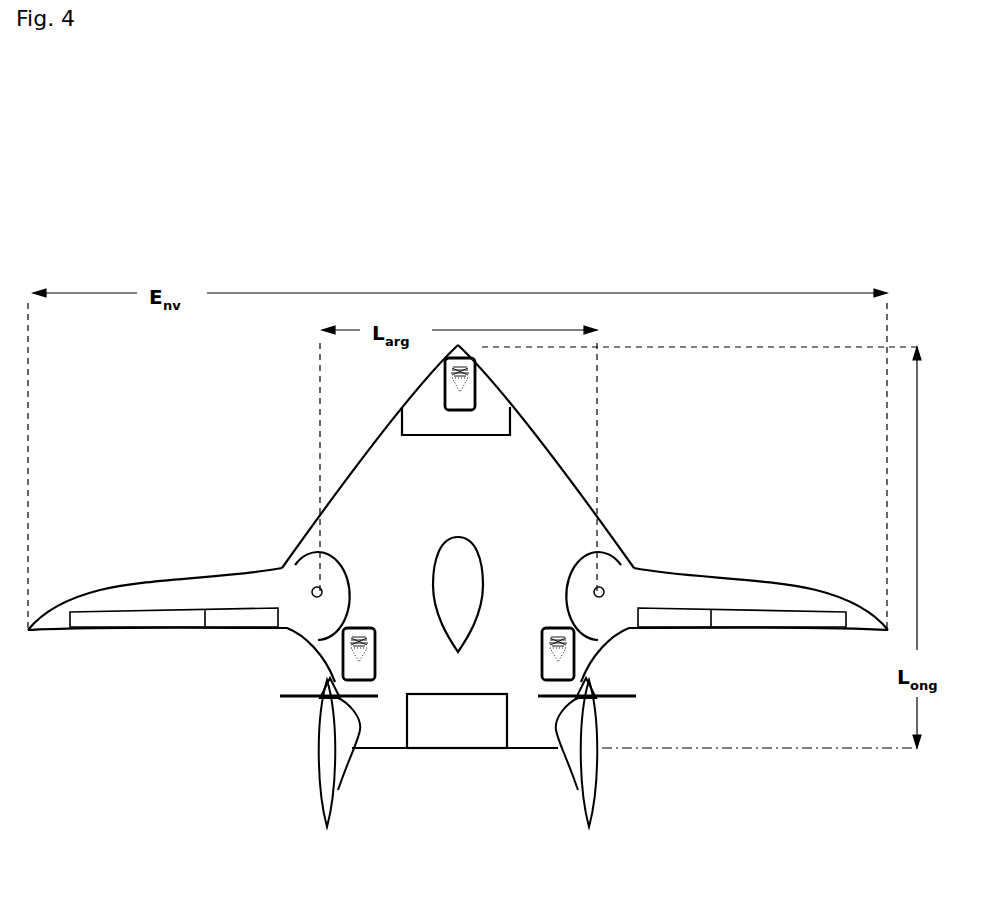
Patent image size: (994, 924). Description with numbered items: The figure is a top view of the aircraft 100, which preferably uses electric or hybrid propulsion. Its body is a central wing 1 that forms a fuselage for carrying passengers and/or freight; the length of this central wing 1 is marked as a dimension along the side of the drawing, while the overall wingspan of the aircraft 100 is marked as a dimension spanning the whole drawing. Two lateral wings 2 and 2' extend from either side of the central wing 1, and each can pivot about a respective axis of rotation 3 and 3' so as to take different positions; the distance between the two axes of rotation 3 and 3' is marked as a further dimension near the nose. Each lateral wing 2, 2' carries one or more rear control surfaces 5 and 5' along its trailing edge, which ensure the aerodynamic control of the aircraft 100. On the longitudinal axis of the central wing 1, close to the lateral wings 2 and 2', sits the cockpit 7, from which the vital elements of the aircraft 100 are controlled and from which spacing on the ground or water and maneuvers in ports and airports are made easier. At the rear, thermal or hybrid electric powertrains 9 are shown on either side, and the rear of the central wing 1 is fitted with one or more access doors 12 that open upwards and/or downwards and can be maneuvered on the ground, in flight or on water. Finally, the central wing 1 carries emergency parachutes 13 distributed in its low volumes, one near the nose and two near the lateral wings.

The aircraft 100 is at (422, 257).
The central wing 1 is at (362, 542).
The lateral wing 2 is at (181, 613).
The lateral wing 2' is at (734, 606).
The axis of rotation 3 is at (272, 553).
The axis of rotation 3' is at (617, 546).
The rear control surface 5 is at (174, 678).
The rear control surface 5' is at (742, 668).
The cockpit 7 is at (472, 552).
The thermal or hybrid electric powertrain 9 is at (330, 750).
The access door 12 is at (428, 420).
The emergency parachute 13 is at (477, 388).